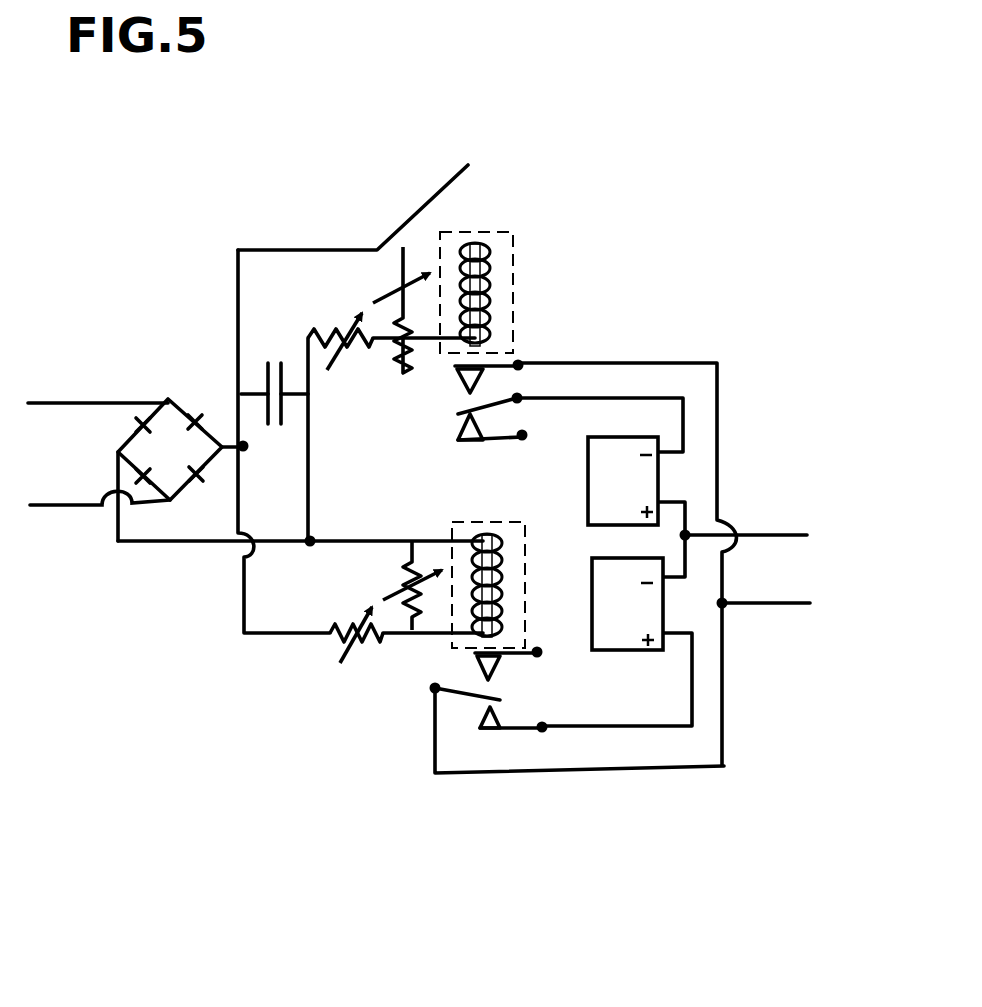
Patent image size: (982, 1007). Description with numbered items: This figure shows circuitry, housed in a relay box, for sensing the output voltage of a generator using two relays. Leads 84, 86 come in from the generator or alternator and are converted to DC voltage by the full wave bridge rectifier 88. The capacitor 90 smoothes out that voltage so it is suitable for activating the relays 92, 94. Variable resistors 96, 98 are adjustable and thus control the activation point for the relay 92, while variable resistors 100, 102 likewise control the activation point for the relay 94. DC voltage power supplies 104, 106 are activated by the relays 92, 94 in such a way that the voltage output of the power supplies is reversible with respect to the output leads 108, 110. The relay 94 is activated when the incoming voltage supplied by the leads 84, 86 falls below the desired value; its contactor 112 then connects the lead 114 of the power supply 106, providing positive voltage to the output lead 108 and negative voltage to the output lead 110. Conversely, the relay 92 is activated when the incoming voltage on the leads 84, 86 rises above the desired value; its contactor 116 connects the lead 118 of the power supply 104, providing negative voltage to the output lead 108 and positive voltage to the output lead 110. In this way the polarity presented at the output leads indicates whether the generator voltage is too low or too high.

The lead 84 is at (33, 400).
The lead 86 is at (45, 510).
The full wave bridge rectifier 88 is at (195, 405).
The capacitor 90 is at (277, 366).
The relay 92 is at (485, 230).
The relay 94 is at (460, 633).
The variable resistor 96 is at (407, 262).
The variable resistor 98 is at (333, 337).
The variable resistor 100 is at (400, 572).
The variable resistor 102 is at (338, 660).
The DC voltage power supply 104 is at (622, 480).
The DC voltage power supply 106 is at (653, 608).
The output lead 108 is at (750, 607).
The output lead 110 is at (755, 530).
The contactor 112 is at (468, 702).
The lead 114 is at (665, 633).
The contactor 116 is at (485, 405).
The lead 118 is at (597, 397).